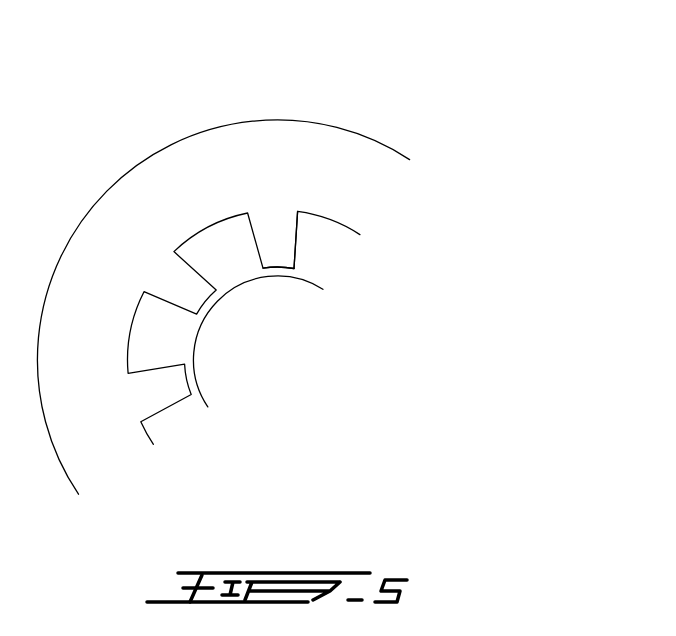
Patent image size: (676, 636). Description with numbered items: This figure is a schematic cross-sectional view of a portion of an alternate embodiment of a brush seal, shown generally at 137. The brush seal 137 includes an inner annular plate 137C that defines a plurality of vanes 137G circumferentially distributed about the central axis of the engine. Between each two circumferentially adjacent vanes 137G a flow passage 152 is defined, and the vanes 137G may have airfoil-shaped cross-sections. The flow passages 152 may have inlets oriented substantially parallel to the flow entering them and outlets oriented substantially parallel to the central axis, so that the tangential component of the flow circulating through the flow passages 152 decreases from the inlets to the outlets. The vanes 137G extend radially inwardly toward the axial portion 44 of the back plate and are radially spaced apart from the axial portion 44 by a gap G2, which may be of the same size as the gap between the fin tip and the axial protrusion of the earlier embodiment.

The brush seal 137 is at (295, 253).
The inner annular plate 137C is at (300, 178).
The vanes 137G is at (298, 240).
The flow passages 152 is at (225, 257).
The gap G2 is at (297, 272).
The axial portion 44 is at (312, 285).